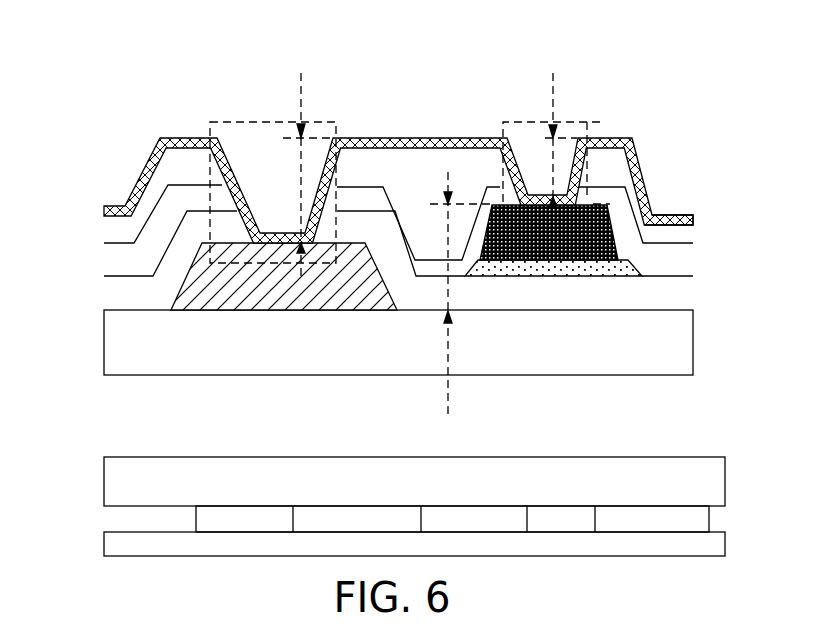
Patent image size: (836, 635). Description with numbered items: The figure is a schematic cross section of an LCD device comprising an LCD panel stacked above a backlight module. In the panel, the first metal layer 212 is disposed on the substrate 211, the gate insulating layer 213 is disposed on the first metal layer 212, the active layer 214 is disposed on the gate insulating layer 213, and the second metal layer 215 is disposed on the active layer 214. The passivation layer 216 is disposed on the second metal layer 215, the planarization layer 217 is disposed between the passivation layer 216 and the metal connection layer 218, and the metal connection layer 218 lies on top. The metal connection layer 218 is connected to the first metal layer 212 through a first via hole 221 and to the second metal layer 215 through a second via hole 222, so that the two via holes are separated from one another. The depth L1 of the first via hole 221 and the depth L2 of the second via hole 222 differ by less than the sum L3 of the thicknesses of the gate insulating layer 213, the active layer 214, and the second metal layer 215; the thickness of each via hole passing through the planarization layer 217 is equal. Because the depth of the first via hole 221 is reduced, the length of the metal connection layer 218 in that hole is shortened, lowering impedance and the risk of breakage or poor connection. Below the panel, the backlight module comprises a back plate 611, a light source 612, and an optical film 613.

The substrate 211 is at (660, 348).
The first metal layer 212 is at (225, 286).
The gate insulating layer 213 is at (660, 293).
The active layer 214 is at (617, 270).
The second metal layer 215 is at (617, 248).
The passivation layer 216 is at (122, 255).
The planarization layer 217 is at (122, 228).
The metal connection layer 218 is at (693, 222).
The first via hole 221 is at (212, 122).
The second via hole 222 is at (585, 122).
The back plate 611 is at (135, 542).
The light source 612 is at (213, 523).
The optical film 613 is at (122, 472).
The depth of the first via hole L1 is at (301, 175).
The depth of the second via hole L2 is at (548, 139).
The sum of thicknesses L3 is at (510, 294).